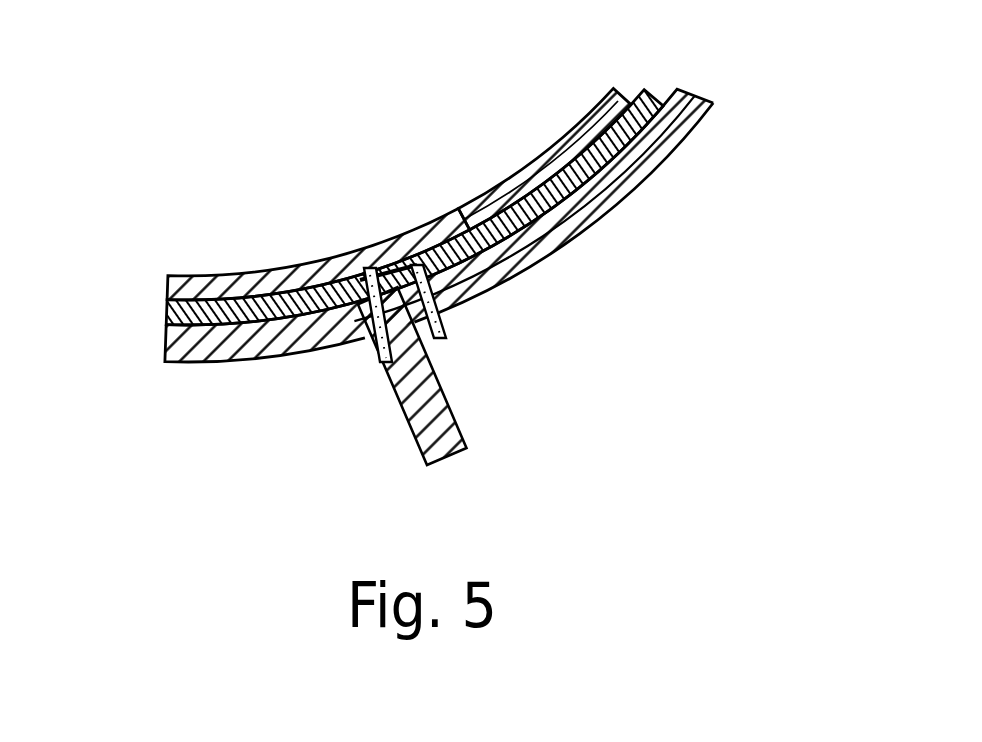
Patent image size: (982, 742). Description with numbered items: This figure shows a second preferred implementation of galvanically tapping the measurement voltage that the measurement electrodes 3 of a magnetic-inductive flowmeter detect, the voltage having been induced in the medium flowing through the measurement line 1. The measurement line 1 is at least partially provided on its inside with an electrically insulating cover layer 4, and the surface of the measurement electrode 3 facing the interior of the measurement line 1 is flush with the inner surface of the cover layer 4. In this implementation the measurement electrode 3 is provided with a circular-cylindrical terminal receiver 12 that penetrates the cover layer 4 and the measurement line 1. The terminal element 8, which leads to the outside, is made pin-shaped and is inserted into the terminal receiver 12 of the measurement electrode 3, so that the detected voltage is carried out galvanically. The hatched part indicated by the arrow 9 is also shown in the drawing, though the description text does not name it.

The measurement line 1 is at (637, 160).
The measurement electrode 3 is at (533, 155).
The cover layer 4 is at (220, 270).
The terminal element 8 is at (176, 314).
The support web 9 is at (368, 382).
The terminal receiver 12 is at (442, 316).